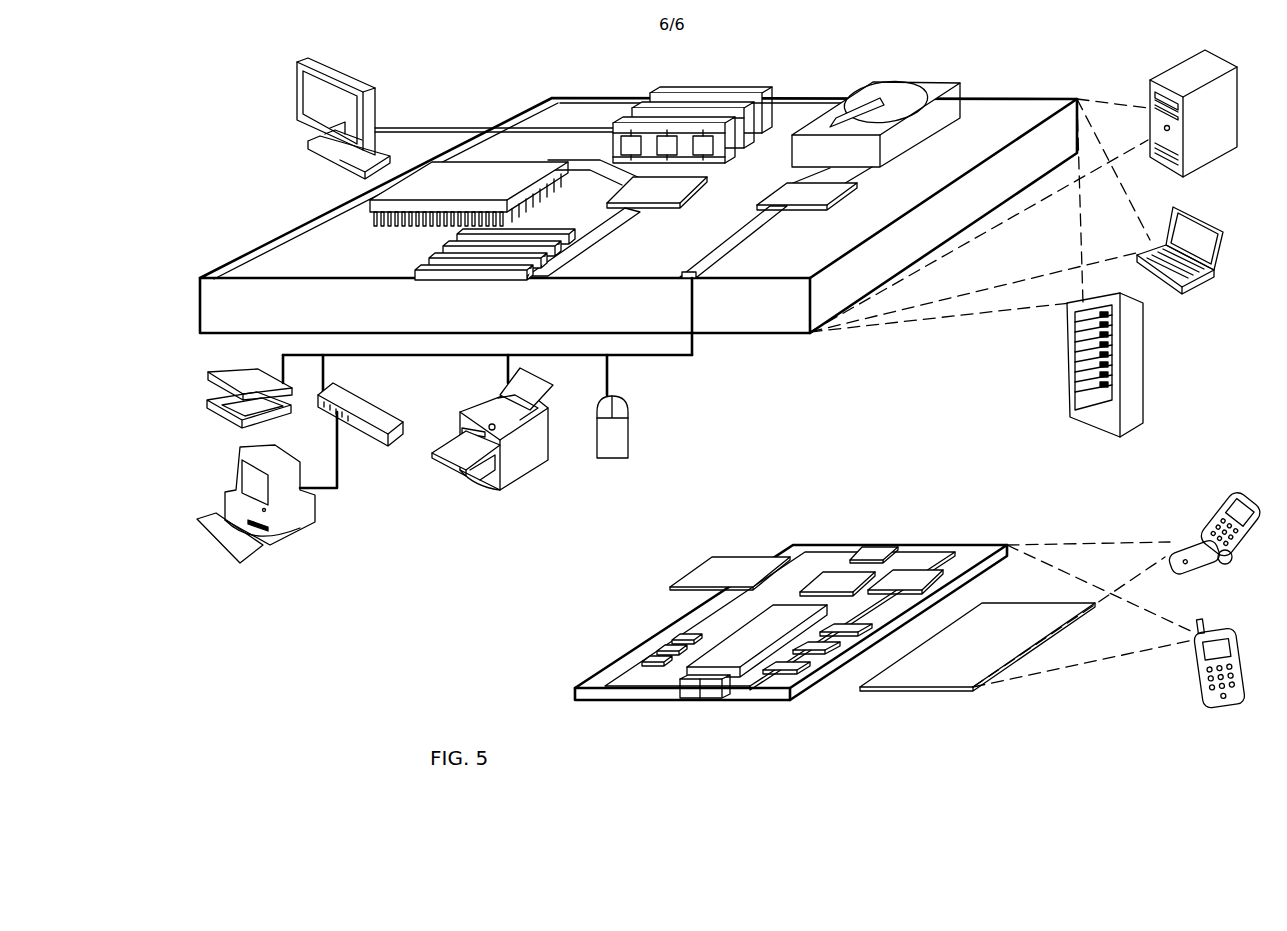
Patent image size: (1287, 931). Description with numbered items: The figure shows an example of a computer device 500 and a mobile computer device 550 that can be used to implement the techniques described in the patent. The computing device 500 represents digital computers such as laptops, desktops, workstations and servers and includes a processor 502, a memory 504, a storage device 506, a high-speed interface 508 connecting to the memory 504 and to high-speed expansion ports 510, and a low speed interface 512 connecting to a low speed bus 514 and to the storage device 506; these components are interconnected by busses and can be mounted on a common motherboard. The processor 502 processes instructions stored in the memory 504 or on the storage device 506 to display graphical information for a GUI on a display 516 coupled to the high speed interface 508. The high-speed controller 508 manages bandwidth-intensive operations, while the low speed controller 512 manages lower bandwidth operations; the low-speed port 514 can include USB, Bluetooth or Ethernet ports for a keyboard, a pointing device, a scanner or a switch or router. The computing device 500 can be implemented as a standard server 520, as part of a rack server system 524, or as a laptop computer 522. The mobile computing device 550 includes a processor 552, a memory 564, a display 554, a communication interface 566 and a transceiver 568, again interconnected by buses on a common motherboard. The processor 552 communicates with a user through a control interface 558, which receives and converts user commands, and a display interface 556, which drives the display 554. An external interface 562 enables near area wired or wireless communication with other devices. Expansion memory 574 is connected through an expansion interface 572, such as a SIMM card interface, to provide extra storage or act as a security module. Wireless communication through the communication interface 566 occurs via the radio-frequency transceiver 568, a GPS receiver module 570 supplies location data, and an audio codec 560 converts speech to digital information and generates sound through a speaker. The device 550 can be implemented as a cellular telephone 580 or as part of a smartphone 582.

The computing device 500 is at (484, 75).
The processor 502 is at (368, 208).
The memory 504 is at (660, 95).
The storage device 506 is at (862, 82).
The high-speed interface 508 is at (640, 192).
The high-speed expansion ports 510 is at (430, 255).
The low speed interface 512 is at (807, 190).
The low speed bus 514 is at (704, 280).
The display 516 is at (297, 62).
The standard server 520 is at (1150, 82).
The laptop computer 522 is at (1175, 210).
The rack server system 524 is at (1068, 387).
The mobile computer device 550 is at (777, 526).
The processor 552 is at (738, 670).
The display 554 is at (973, 690).
The display interface 556 is at (803, 685).
The control interface 558 is at (846, 650).
The audio codec 560 is at (850, 632).
The external interface 562 is at (699, 683).
The memory 564 is at (657, 652).
The communication interface 566 is at (837, 578).
The transceiver 568 is at (908, 578).
The GPS receiver module 570 is at (852, 560).
The expansion interface 572 is at (770, 555).
The expansion memory 574 is at (713, 560).
The cellular telephone 580 is at (1215, 495).
The smartphone 582 is at (1200, 617).